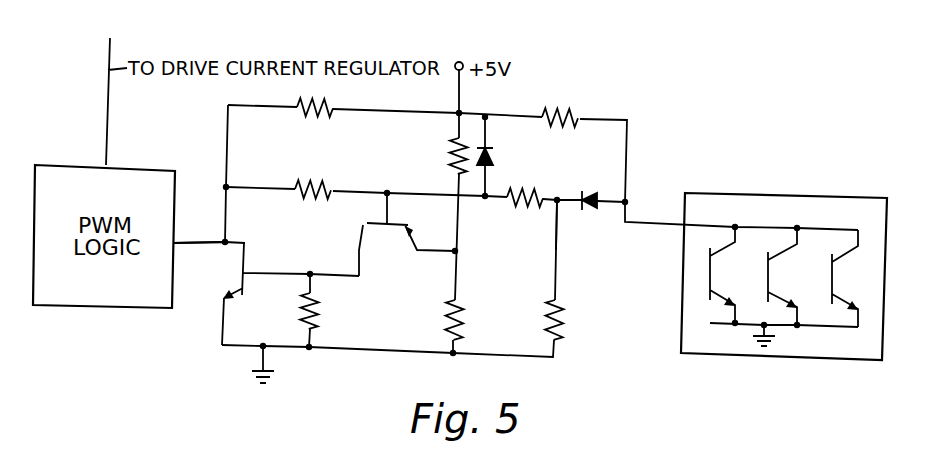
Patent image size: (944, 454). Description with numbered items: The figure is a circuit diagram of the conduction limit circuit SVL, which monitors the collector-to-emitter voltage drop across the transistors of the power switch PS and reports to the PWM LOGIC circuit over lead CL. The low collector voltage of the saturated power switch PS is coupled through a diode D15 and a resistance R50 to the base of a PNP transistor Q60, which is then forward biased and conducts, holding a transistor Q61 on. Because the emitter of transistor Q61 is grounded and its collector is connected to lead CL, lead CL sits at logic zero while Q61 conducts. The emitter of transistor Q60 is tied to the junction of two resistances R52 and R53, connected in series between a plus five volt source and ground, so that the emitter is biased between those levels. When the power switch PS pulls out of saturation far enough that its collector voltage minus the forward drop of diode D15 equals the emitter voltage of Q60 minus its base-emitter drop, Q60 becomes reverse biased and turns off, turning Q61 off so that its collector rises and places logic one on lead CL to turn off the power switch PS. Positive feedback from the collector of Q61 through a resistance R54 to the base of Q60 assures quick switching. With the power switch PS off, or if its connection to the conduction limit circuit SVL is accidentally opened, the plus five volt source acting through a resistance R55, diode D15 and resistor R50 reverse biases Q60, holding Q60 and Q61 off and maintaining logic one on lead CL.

The resistance R50 is at (523, 188).
The resistance R52 is at (450, 152).
The resistance R53 is at (446, 315).
The resistance R54 is at (317, 182).
The resistance R55 is at (568, 108).
The PNP transistor Q60 is at (362, 226).
The transistor Q61 is at (246, 256).
The diode D15 is at (583, 210).
The lead CL is at (197, 246).
The conduction limit circuit SVL is at (626, 300).
The power switch PS is at (780, 227).